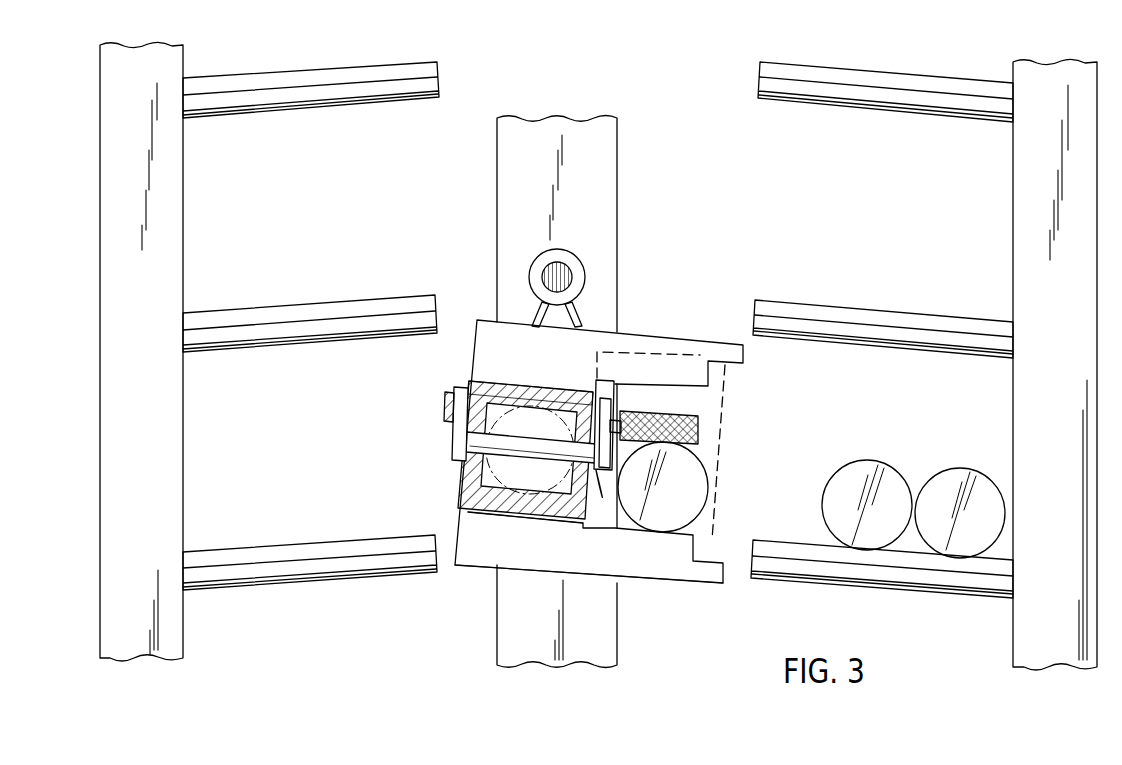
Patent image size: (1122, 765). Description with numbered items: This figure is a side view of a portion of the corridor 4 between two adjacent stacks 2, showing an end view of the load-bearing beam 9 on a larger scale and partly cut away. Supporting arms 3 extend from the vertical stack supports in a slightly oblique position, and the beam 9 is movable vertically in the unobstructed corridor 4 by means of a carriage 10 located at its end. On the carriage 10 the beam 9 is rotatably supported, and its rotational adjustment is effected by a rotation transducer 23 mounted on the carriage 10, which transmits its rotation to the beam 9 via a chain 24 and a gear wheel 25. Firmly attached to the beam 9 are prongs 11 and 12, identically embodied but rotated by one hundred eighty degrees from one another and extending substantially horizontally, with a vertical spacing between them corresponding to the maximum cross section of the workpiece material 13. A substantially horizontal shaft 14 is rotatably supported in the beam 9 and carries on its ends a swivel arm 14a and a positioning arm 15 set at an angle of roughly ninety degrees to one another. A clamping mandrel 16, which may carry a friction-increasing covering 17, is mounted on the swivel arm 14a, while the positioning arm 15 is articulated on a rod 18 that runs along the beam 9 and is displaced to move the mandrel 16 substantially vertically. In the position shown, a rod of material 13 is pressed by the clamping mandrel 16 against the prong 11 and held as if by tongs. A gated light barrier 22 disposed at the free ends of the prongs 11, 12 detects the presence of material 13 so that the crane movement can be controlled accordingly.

The stack 2 is at (167, 197).
The supporting arm 3 is at (296, 312).
The corridor 4 is at (706, 130).
The load-bearing beam 9 is at (470, 496).
The carriage 10 is at (508, 217).
The prong 11 is at (520, 556).
The prong 12 is at (688, 342).
The workpiece material 13 is at (690, 494).
The shaft 14 is at (466, 462).
The swivel arm 14a is at (600, 440).
The positioning arm 15 is at (455, 438).
The clamping mandrel 16 is at (618, 402).
The covering 17 is at (698, 430).
The rod 18 is at (444, 402).
The gated light barrier 22 is at (722, 538).
The rotation transducer 23 is at (568, 262).
The chain 24 is at (578, 318).
The gear wheel 25 is at (522, 396).